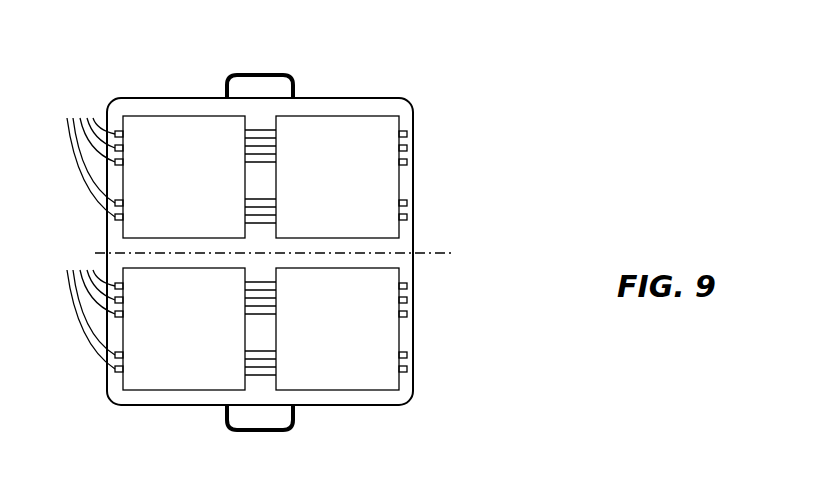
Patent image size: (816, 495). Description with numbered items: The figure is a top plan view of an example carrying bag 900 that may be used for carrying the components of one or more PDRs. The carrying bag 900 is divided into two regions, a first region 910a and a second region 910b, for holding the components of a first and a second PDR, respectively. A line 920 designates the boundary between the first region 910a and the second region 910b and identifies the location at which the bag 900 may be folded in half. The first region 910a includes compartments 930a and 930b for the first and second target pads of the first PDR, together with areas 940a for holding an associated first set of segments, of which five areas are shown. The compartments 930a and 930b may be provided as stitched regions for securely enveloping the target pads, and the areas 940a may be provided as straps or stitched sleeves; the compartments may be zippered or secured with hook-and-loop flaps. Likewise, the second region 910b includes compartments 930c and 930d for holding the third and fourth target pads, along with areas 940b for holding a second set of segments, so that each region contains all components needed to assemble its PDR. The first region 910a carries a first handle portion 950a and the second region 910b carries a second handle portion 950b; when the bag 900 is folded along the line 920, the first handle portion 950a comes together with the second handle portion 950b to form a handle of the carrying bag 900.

The carrying bag 900 is at (442, 73).
The first region 910a is at (310, 177).
The second region 910b is at (310, 329).
The line 920 is at (437, 252).
The compartment 930a is at (180, 177).
The compartment 930b is at (341, 177).
The compartment 930c is at (180, 329).
The compartment 930d is at (341, 329).
The areas 940a is at (81, 156).
The areas 940b is at (81, 307).
The first handle portion 950a is at (259, 74).
The second handle portion 950b is at (260, 432).